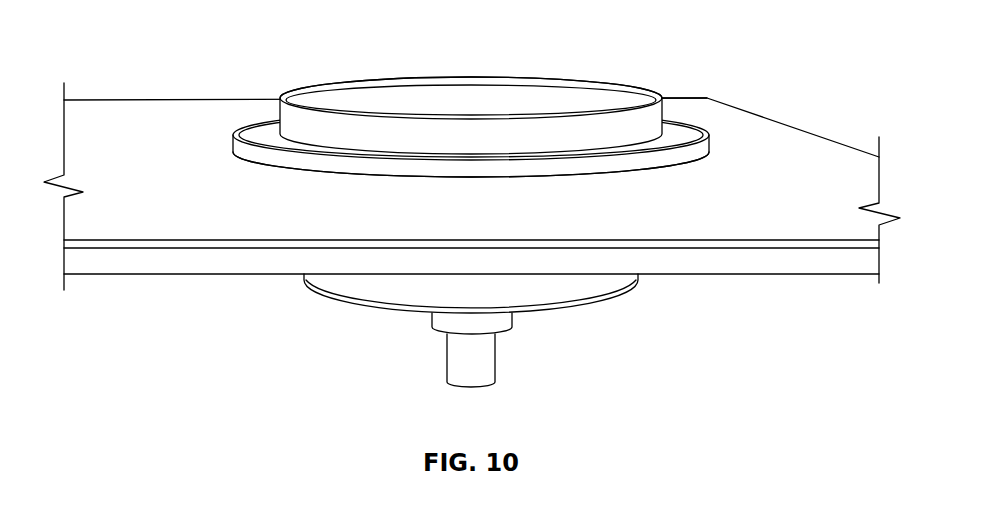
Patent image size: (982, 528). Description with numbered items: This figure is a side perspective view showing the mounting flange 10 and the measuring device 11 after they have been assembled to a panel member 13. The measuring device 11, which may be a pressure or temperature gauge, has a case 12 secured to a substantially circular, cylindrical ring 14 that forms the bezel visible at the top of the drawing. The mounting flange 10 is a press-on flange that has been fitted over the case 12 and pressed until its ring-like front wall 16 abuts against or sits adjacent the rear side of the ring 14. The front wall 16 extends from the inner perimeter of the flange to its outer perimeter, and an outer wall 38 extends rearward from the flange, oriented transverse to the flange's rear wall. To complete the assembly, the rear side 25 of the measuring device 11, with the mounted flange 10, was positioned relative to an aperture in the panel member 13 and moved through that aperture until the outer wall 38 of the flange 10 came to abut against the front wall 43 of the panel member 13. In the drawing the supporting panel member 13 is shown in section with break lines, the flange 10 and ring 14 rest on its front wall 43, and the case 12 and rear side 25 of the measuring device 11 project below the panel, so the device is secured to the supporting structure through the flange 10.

The mounting flange 10 is at (680, 112).
The measuring device 11 is at (543, 95).
The case 12 is at (595, 283).
The panel member 13 is at (176, 128).
The ring 14 is at (278, 102).
The front wall 16 is at (688, 138).
The rear side of measuring device 25 is at (543, 328).
The outer wall 38 is at (438, 171).
The front wall of panel member 43 is at (230, 213).